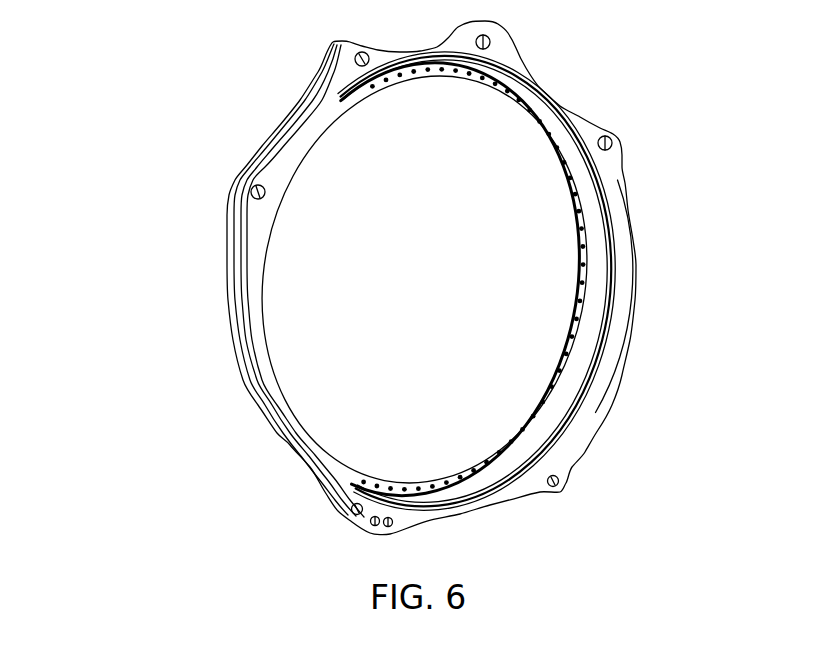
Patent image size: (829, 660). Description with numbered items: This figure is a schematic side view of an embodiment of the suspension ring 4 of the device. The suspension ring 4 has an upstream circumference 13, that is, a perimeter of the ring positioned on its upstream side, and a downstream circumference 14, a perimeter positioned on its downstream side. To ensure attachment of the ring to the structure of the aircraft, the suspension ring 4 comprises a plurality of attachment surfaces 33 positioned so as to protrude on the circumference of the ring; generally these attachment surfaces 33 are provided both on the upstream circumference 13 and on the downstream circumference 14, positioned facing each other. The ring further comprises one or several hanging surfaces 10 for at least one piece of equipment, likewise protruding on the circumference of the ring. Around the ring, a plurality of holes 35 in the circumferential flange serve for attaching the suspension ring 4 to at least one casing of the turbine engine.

The suspension ring 4 is at (377, 278).
The hanging surface 10 is at (576, 477).
The upstream circumference 13 is at (258, 400).
The downstream circumference 14 is at (263, 344).
The attachment surface 33 is at (237, 188).
The holes 35 is at (445, 88).